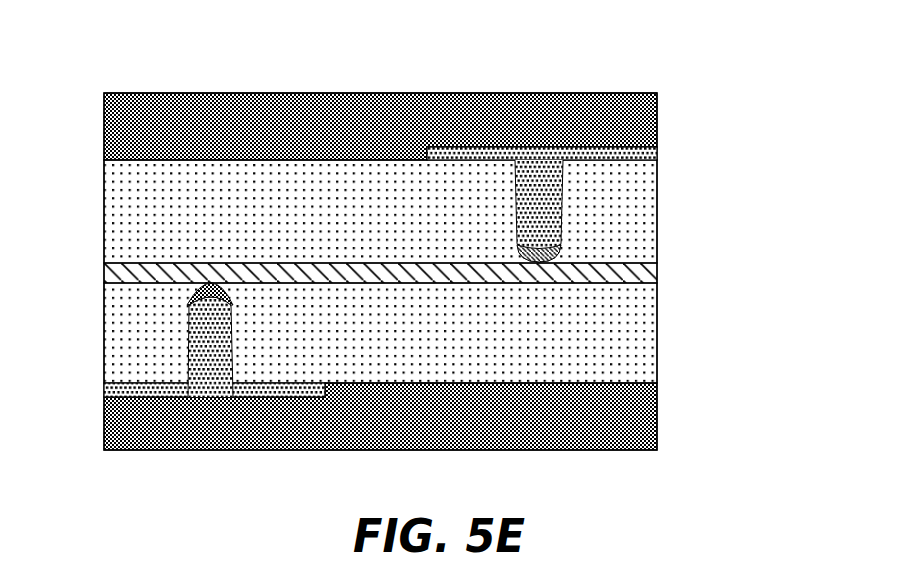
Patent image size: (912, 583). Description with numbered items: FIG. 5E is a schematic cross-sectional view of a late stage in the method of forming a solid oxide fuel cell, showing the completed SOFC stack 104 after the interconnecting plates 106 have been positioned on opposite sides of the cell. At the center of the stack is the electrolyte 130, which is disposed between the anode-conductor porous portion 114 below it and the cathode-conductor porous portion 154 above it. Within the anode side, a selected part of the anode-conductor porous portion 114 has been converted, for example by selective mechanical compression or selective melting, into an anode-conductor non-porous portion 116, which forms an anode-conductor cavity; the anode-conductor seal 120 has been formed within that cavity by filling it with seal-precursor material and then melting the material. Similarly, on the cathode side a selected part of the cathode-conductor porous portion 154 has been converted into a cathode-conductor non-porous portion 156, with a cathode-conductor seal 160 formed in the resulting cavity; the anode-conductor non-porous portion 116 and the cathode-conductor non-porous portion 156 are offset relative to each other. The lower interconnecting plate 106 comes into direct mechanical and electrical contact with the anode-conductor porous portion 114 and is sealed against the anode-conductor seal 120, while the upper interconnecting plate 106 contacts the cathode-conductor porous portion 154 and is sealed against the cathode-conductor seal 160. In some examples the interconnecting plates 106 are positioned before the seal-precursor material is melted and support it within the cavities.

The SOFC stack 104 is at (686, 66).
The interconnecting plate 106 is at (660, 118).
The cathode-conductor porous portion 154 is at (128, 191).
The cathode-conductor seal 160 is at (540, 222).
The cathode-conductor non-porous portion 156 is at (556, 255).
The electrolyte 130 is at (118, 272).
The anode-conductor non-porous portion 116 is at (196, 288).
The anode-conductor porous portion 114 is at (150, 330).
The anode-conductor seal 120 is at (188, 350).